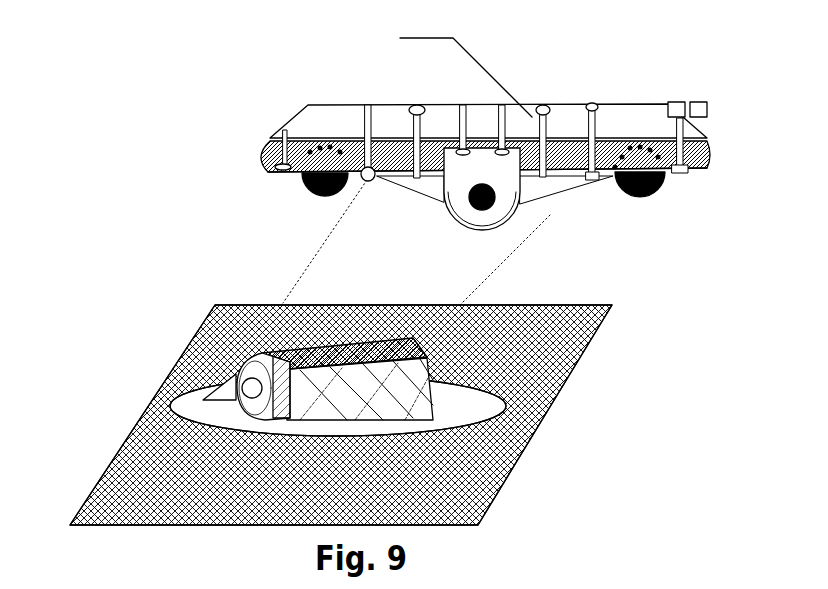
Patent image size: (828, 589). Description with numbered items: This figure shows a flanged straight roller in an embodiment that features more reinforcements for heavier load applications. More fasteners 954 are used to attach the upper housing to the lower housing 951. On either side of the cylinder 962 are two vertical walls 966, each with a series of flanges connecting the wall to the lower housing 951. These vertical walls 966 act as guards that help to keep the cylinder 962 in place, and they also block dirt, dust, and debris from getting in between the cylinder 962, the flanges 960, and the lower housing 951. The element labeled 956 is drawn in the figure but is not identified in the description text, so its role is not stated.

The lower housing 951 is at (204, 293).
The fasteners 954 is at (329, 111).
The sensor pin 956 is at (666, 174).
The flanges 960 is at (549, 152).
The cylinder 962 is at (447, 318).
The vertical walls 966 is at (396, 357).